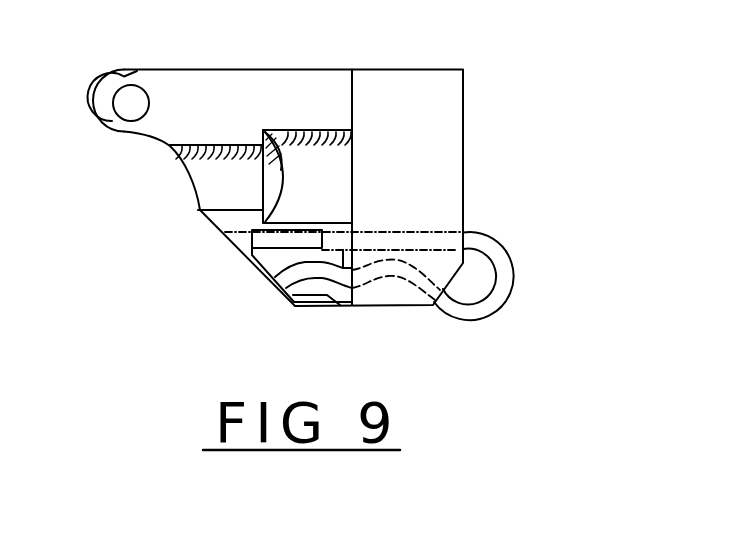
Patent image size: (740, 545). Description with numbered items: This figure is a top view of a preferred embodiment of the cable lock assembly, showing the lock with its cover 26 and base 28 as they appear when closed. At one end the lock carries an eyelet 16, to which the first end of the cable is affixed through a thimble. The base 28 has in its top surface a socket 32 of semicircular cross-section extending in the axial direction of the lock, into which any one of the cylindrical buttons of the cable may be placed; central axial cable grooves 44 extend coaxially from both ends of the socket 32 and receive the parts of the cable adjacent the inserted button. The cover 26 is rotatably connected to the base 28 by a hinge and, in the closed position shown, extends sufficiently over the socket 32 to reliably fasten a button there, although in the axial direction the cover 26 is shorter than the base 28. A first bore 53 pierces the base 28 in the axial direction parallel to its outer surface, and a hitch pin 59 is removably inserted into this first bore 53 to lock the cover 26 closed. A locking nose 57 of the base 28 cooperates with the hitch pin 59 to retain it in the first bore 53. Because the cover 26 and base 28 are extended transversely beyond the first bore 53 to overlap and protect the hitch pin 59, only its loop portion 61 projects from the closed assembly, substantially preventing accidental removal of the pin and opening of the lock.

The eyelet 16 is at (128, 77).
The cover 26 is at (438, 97).
The base 28 is at (108, 77).
The socket 32 is at (305, 190).
The central axial cable grooves 44 is at (213, 175).
The first bore 53 is at (227, 231).
The locking nose 57 is at (326, 254).
The hitch pin 59 is at (497, 250).
The loop portion 61 is at (516, 285).